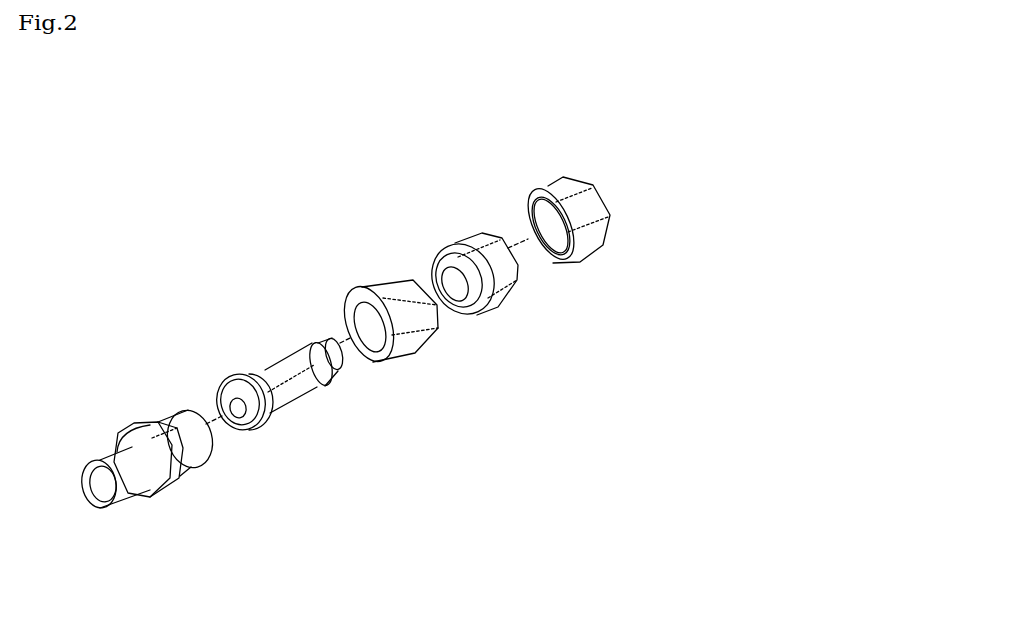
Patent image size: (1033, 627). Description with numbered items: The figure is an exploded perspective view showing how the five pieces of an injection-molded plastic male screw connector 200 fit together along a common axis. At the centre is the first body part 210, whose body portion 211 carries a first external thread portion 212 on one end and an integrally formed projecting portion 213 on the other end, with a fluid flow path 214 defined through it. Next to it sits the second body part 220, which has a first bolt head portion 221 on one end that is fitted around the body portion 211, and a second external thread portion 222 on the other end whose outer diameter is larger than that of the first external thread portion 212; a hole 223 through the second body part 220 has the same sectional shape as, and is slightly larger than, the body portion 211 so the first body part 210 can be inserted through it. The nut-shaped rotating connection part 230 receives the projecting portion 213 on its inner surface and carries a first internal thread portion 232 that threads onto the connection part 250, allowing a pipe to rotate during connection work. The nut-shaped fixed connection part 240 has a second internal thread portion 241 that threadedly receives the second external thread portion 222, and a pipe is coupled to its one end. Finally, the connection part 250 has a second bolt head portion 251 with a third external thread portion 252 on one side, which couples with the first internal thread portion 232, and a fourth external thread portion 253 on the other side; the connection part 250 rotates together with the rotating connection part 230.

The plastic male screw connector 200 is at (667, 137).
The first body part 210 is at (309, 450).
The body portion 211 is at (278, 357).
The first external thread portion 212 is at (308, 334).
The projecting portion 213 is at (226, 381).
The fluid flow path 214 is at (237, 404).
The second body part 220 is at (506, 332).
The first bolt head portion 221 is at (455, 245).
The second external thread portion 222 is at (492, 236).
The hole 223 is at (447, 278).
The rotating connection part 230 is at (424, 383).
The first internal thread portion 232 is at (363, 325).
The fixed connection part 240 is at (604, 278).
The second internal thread portion 241 is at (543, 217).
The connection part 250 is at (198, 525).
The second bolt head portion 251 is at (132, 427).
The third external thread portion 252 is at (165, 409).
The fourth external thread portion 253 is at (112, 458).